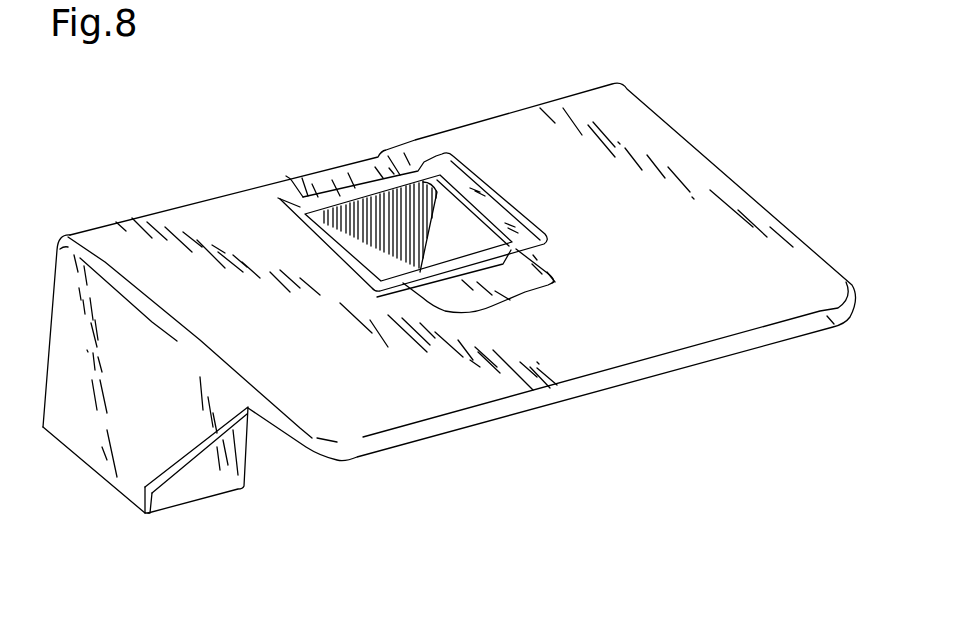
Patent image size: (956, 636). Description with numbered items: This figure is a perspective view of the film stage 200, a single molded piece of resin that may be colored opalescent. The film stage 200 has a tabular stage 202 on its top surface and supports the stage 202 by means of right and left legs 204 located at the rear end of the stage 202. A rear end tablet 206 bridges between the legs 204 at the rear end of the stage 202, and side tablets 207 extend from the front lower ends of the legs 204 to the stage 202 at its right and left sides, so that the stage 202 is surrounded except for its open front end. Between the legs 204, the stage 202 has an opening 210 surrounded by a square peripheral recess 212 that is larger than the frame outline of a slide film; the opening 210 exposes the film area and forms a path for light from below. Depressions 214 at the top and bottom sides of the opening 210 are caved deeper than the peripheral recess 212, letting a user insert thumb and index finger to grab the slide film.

The film stage 200 is at (740, 178).
The stage 202 is at (650, 337).
The legs 204 is at (213, 481).
The rear end tablet 206 is at (387, 212).
The side tablets 207 is at (175, 441).
The opening 210 is at (408, 259).
The peripheral recess 212 is at (463, 181).
The depressions 214 is at (327, 175).